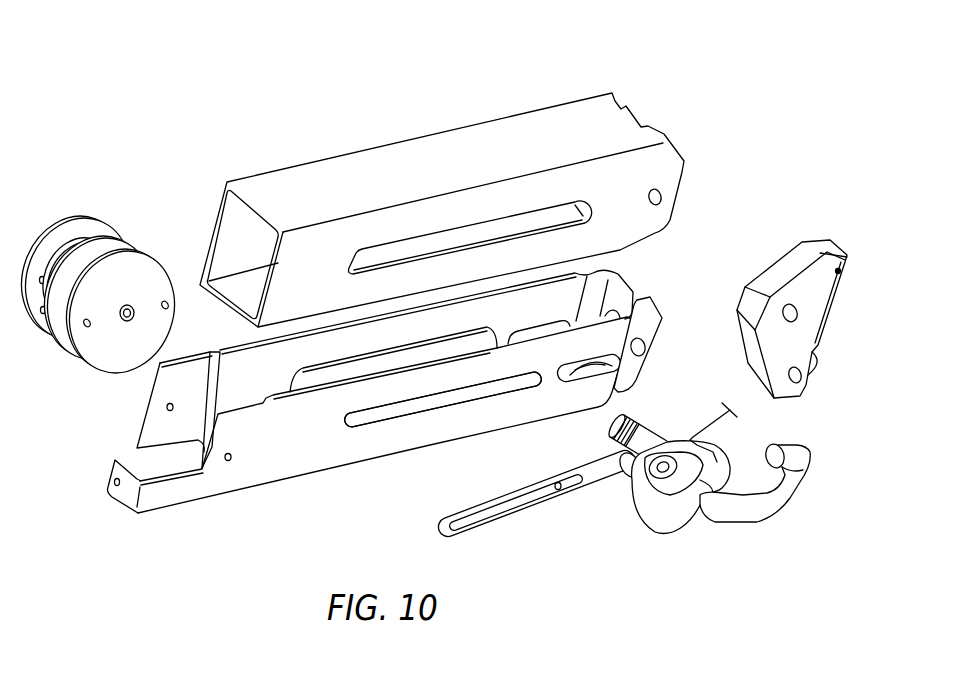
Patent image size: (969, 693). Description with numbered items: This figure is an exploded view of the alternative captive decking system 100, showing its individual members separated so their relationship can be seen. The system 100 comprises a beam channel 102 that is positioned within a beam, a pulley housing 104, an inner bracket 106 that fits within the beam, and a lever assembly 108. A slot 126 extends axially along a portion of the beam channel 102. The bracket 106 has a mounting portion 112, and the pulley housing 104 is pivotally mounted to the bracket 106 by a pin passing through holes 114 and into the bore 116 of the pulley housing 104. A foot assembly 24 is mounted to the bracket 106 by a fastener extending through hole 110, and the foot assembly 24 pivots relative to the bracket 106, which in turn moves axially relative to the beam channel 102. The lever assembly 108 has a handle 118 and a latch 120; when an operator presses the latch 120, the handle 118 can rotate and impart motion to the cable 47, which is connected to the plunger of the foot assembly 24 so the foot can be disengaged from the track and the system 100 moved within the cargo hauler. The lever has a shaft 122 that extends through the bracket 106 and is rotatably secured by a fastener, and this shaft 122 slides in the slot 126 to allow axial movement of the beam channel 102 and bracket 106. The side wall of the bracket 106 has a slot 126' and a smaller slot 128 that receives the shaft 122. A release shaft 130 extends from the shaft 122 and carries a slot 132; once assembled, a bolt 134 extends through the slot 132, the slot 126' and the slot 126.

The captive decking system 100 is at (280, 139).
The beam channel 102 is at (485, 132).
The pulley housing 104 is at (81, 217).
The inner bracket 106 is at (303, 463).
The lever assembly 108 is at (743, 510).
The hole 110 is at (645, 343).
The mounting portion 112 is at (165, 497).
The holes 114 is at (231, 461).
The bore 116 is at (122, 322).
The handle 118 is at (810, 444).
The latch 120 is at (652, 520).
The shaft 122 is at (613, 439).
The slot 126 is at (473, 158).
The slot 126' is at (443, 437).
The smaller slot 128 is at (603, 369).
The release shaft 130 is at (466, 540).
The slot 132 is at (560, 490).
The bolt 134 is at (483, 475).
The foot assembly 24 is at (832, 230).
The cable 47 is at (712, 410).